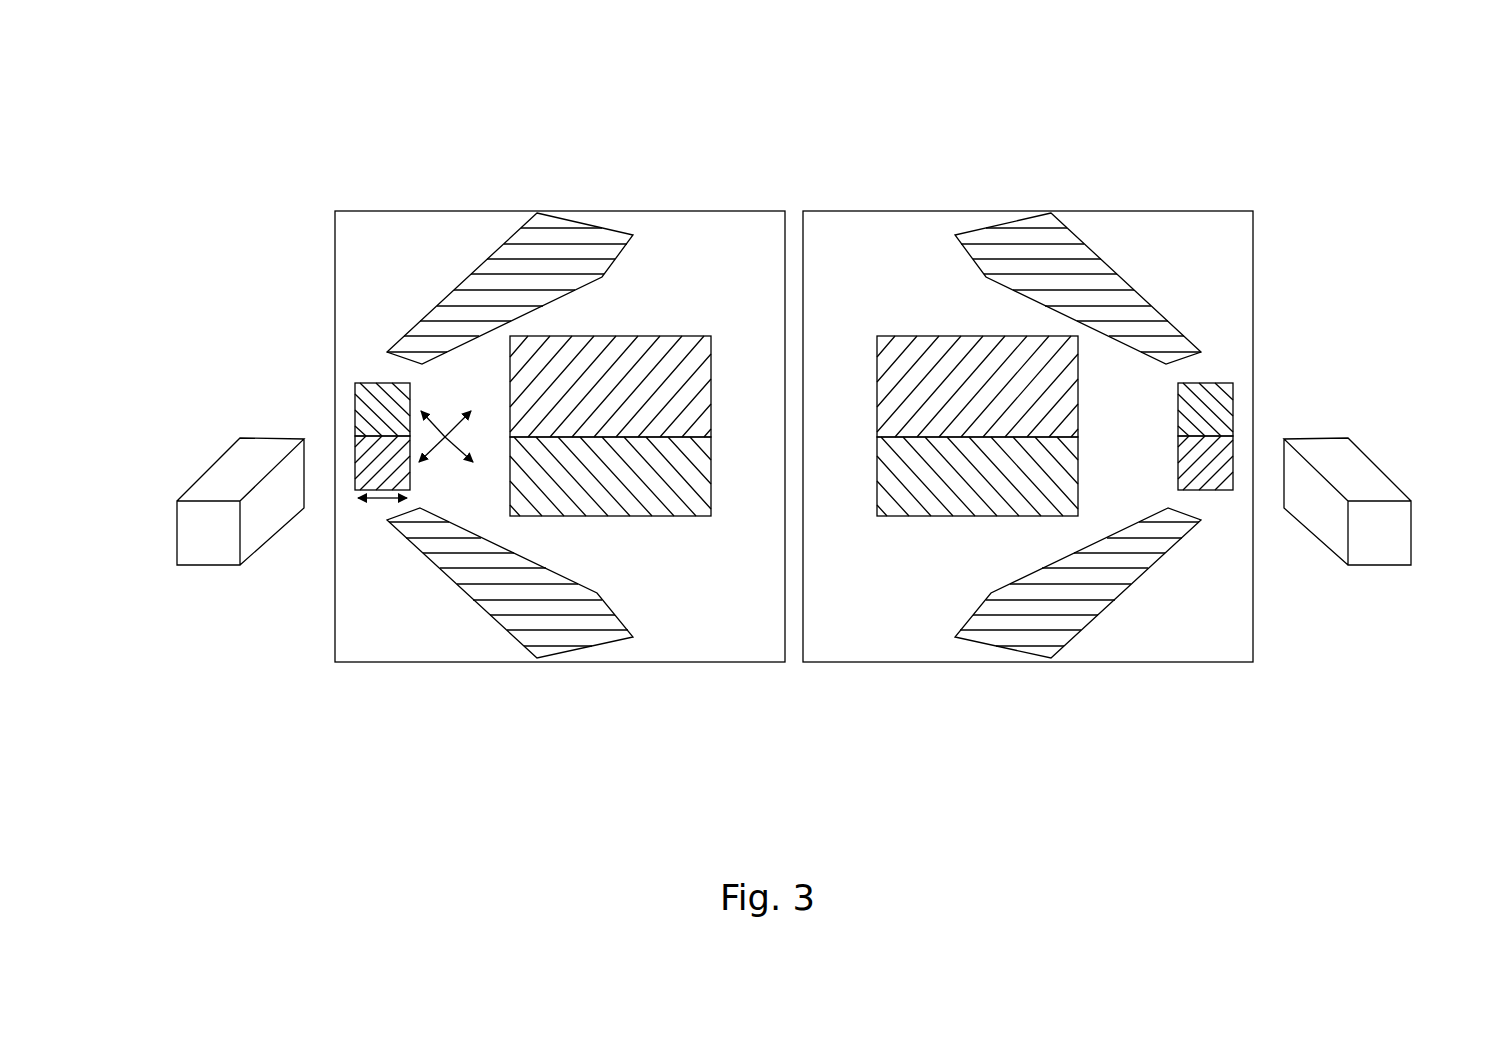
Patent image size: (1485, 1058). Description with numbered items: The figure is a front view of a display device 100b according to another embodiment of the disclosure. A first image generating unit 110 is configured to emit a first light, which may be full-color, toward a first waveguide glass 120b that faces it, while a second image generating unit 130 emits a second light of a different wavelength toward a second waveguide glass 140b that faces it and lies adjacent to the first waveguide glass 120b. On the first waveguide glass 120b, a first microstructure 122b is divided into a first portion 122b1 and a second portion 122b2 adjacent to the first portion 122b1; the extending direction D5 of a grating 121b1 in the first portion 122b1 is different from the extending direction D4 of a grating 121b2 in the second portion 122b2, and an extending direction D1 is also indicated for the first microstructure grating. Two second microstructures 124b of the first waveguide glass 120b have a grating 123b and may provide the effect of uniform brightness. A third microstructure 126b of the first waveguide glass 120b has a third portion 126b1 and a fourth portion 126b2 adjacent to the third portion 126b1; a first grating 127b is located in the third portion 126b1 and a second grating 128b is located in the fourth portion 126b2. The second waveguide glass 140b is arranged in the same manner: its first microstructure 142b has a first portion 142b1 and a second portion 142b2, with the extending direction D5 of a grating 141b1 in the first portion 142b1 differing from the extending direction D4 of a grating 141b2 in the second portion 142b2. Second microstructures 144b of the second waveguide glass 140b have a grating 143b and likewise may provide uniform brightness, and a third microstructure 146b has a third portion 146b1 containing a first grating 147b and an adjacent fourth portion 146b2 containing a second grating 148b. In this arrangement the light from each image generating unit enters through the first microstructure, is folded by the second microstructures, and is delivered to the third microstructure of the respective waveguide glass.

The display device 100b is at (156, 57).
The first image generating unit 110 is at (208, 567).
The second image generating unit 130 is at (1380, 567).
The first waveguide glass 120b is at (475, 211).
The second waveguide glass 140b is at (1113, 211).
The grating of the first portion 121b1 is at (370, 393).
The grating of the second portion 121b2 is at (355, 478).
The first microstructure 122b is at (203, 345).
The first portion 122b1 is at (357, 395).
The second portion 122b2 is at (355, 457).
The grating 123b is at (500, 273).
The second microstructures 124b is at (447, 300).
The third microstructure 126b is at (783, 733).
The third portion 126b1 is at (711, 388).
The fourth portion 126b2 is at (711, 474).
The first grating 127b is at (632, 357).
The second grating 128b is at (673, 467).
The grating of the first portion 141b1 is at (1218, 393).
The grating of the second portion 141b2 is at (1233, 478).
The first microstructure 142b is at (1389, 345).
The first portion 142b1 is at (1231, 395).
The second portion 142b2 is at (1233, 457).
The grating 143b is at (1088, 273).
The second microstructures 144b is at (1141, 300).
The third microstructure 146b is at (1037, 733).
The third portion 146b1 is at (877, 388).
The fourth portion 146b2 is at (877, 474).
The first grating 147b is at (956, 357).
The second grating 148b is at (915, 467).
The extending direction D1 is at (383, 505).
The extending direction D4 is at (458, 407).
The extending direction D5 is at (457, 467).